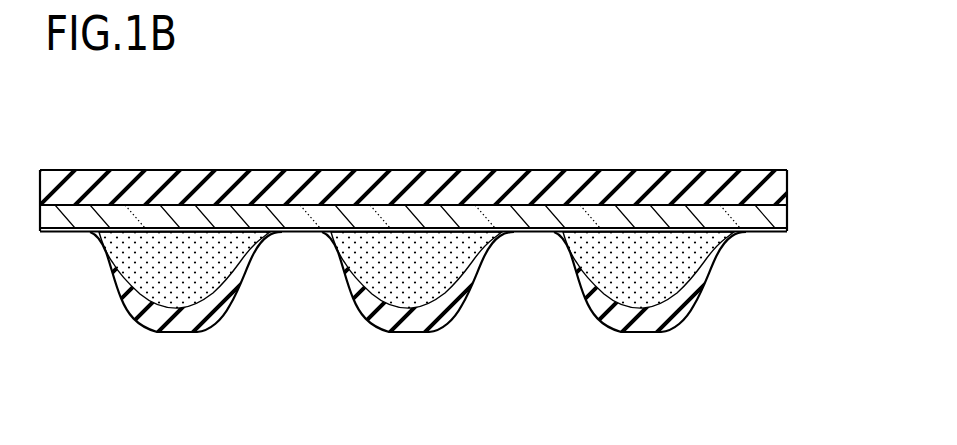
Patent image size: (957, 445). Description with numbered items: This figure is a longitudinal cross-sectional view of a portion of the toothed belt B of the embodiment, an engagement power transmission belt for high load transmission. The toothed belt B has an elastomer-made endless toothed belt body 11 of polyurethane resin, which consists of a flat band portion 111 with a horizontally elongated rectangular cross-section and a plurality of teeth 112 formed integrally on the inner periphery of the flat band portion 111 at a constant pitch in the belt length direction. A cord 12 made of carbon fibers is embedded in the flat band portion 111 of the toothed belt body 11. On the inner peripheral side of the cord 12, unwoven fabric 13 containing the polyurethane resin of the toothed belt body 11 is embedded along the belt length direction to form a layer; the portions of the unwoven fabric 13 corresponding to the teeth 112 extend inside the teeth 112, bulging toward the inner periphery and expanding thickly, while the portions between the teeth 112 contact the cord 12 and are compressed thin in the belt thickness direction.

The toothed belt B is at (430, 135).
The toothed belt body 11 is at (752, 172).
The flat band portion 111 is at (258, 180).
The teeth 112 is at (183, 322).
The cord 12 is at (628, 215).
The unwoven fabric 13 is at (660, 278).